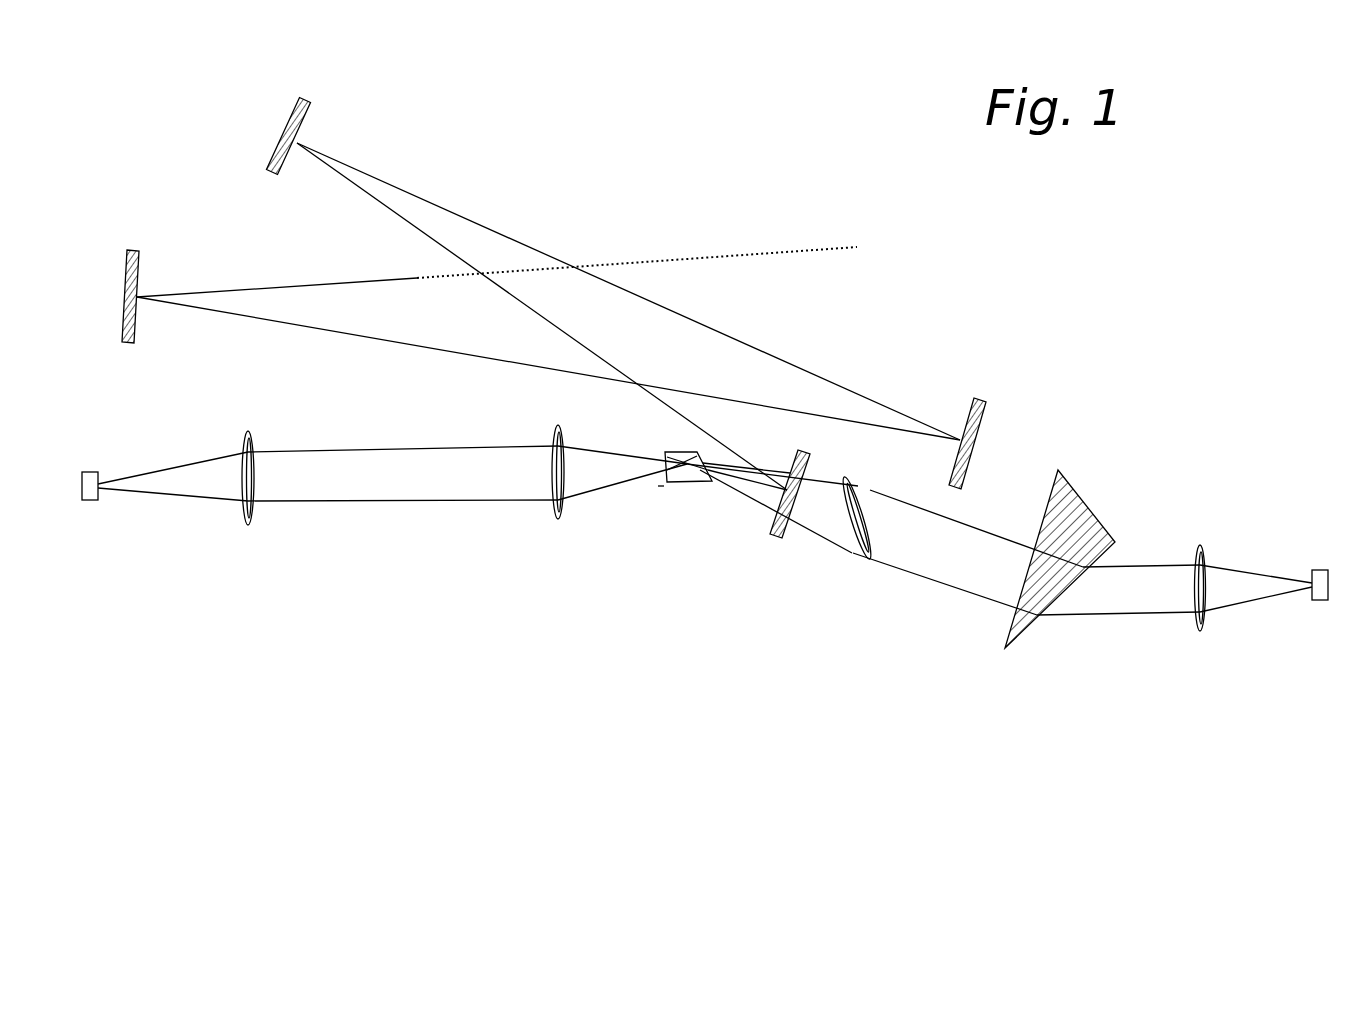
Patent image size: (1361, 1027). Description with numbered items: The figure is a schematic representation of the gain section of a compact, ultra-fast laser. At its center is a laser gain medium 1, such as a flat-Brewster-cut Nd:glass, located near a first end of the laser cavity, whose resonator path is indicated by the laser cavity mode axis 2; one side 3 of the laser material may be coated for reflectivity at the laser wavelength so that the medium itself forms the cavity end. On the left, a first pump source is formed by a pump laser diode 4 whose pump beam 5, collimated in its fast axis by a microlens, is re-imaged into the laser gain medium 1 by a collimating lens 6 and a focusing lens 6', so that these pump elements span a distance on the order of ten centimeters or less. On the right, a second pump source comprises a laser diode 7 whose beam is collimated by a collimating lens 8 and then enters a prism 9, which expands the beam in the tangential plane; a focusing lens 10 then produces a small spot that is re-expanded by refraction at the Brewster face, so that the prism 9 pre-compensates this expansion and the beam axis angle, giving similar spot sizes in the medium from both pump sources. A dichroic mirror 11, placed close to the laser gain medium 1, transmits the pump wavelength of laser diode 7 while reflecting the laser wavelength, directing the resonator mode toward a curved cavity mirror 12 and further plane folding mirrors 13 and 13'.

The laser gain medium 1 is at (737, 568).
The laser cavity mode axis 2 is at (628, 291).
The side of the laser material 3 is at (616, 579).
The pump laser diode 4 is at (155, 597).
The pump beam 5 is at (201, 562).
The collimating lens 6 is at (310, 528).
The focusing lens 6' is at (492, 546).
The laser diode 7 is at (1265, 647).
The collimating lens 8 is at (1144, 625).
The prism 9 is at (1129, 546).
The focusing lens 10 is at (911, 570).
The dichroic mirror 11 is at (874, 586).
The curved cavity mirror 12 is at (305, 105).
The plane folding mirror 13 is at (1063, 415).
The plane folding mirror 13' is at (222, 286).